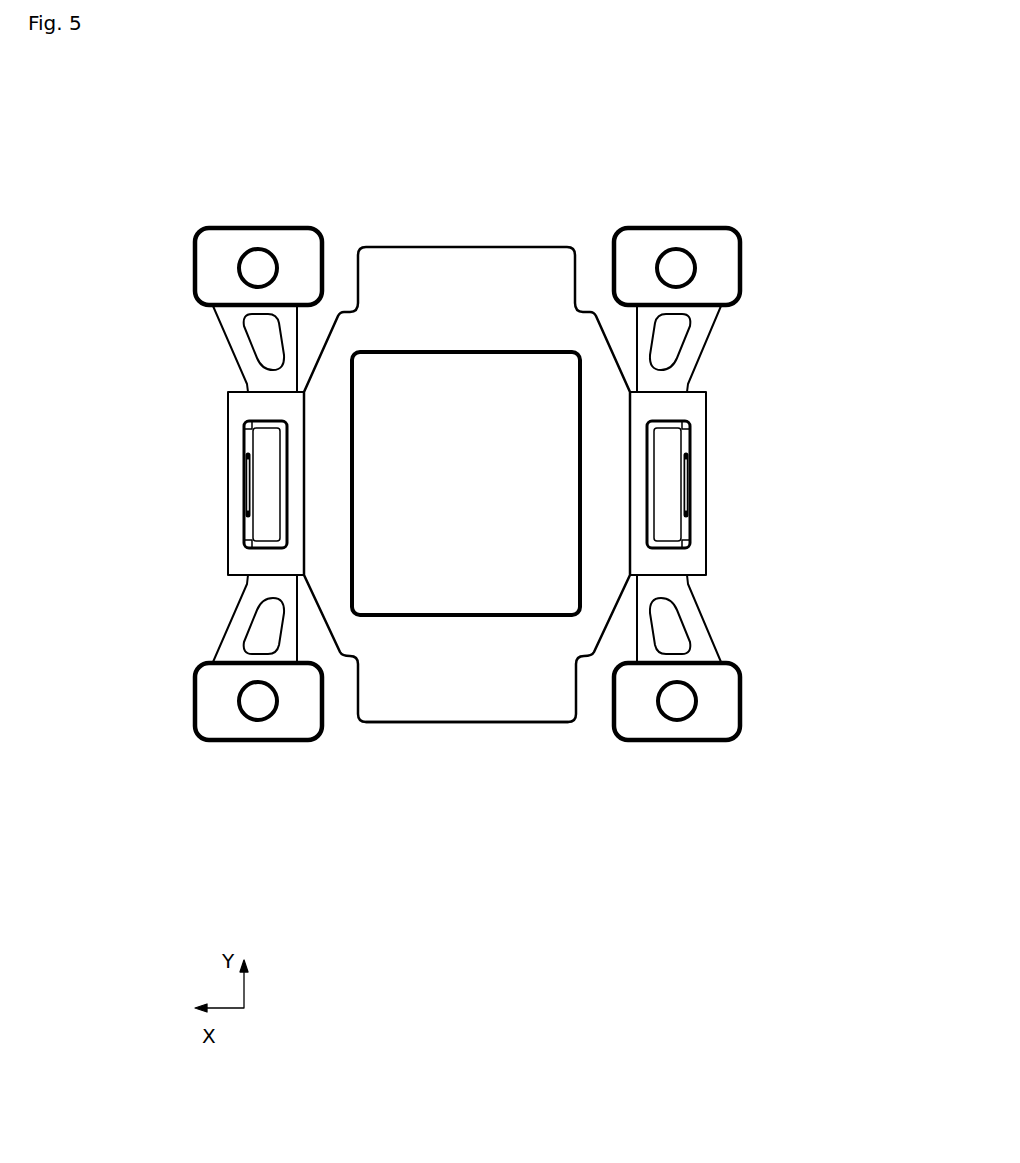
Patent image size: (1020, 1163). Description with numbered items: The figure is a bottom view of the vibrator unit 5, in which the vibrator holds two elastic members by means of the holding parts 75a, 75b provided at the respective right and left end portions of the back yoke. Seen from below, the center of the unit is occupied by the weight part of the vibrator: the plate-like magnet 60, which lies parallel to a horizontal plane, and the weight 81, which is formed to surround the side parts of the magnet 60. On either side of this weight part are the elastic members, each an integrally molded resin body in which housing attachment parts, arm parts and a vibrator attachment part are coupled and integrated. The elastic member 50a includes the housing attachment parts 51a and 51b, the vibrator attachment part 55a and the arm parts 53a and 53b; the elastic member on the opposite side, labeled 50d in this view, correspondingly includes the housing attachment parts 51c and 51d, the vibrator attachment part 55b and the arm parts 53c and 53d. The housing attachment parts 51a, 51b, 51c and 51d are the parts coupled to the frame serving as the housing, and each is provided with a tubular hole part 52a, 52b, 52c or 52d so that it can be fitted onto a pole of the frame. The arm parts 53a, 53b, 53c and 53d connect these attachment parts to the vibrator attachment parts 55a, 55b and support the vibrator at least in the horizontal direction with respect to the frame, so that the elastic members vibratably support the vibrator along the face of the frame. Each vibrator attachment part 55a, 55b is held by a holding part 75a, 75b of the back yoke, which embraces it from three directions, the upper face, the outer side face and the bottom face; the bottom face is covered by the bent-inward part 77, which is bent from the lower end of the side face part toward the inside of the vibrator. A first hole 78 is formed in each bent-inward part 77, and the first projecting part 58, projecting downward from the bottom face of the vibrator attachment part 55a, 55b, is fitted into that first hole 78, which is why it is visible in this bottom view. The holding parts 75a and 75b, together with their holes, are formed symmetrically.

The vibrator unit 5 is at (103, 93).
The housing attachment part 51a is at (226, 258).
The housing attachment part 51b is at (222, 717).
The housing attachment part 51c is at (715, 715).
The housing attachment part 51d is at (702, 258).
The hole part 52a is at (262, 266).
The hole part 52b is at (260, 705).
The hole part 52c is at (675, 705).
The hole part 52d is at (672, 268).
The arm part 53a is at (233, 333).
The arm part 53b is at (240, 655).
The arm part 53c is at (710, 630).
The arm part 53d is at (703, 325).
The right elastic member 50a is at (200, 349).
The arm 50d is at (736, 354).
The bent-inward part 77 is at (477, 483).
The holding part 75a is at (266, 483).
The holding part 75b is at (668, 483).
The first projecting part 58 is at (465, 484).
The vibrator attachment part 55a is at (265, 484).
The vibrator attachment part 55b is at (668, 484).
The first hole 78 is at (246, 541).
The magnet 60 is at (520, 572).
The weight 81 is at (447, 662).